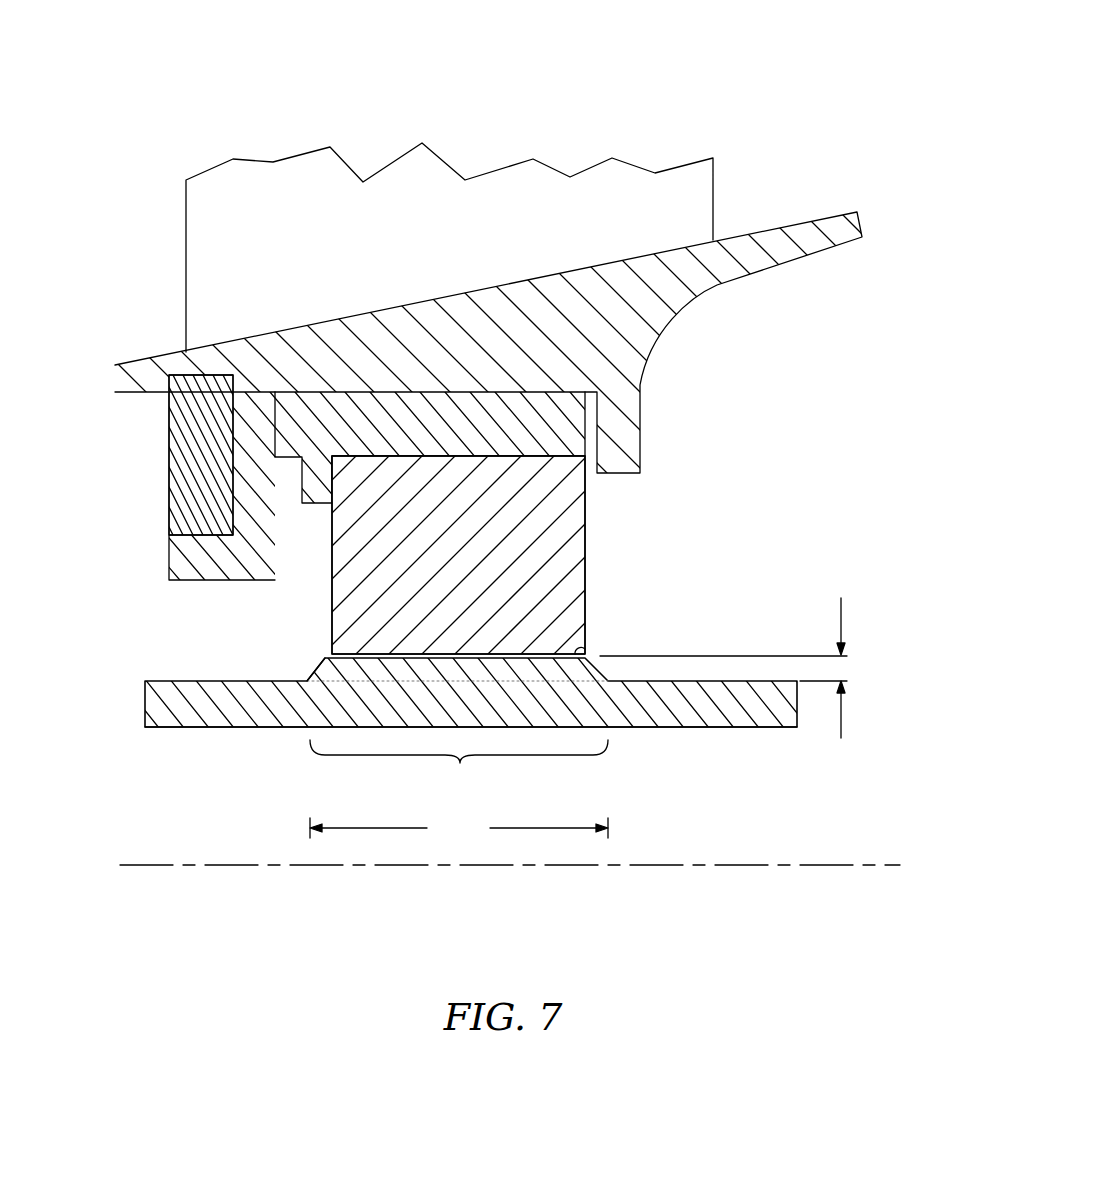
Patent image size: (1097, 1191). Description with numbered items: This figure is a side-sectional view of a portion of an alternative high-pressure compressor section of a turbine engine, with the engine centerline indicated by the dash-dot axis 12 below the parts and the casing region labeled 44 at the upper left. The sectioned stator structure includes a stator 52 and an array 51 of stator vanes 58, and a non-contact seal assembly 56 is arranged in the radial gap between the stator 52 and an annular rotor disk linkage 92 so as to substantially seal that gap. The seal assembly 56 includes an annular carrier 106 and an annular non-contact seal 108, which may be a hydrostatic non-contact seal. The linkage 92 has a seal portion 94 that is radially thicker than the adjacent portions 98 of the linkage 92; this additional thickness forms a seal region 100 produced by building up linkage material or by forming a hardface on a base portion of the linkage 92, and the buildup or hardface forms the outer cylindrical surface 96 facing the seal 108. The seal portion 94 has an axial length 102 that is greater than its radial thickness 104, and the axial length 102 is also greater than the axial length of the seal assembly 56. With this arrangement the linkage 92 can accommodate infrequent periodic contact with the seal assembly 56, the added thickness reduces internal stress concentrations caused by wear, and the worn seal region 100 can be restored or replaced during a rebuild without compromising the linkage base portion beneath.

The engine centerline axis 12 is at (810, 867).
The turbine casing 44 is at (112, 230).
The array of stator vanes 51 is at (782, 88).
The stator 52 is at (815, 218).
The non-contact seal assembly 56 is at (606, 544).
The stator vane 58 is at (441, 238).
The annular rotor disk linkage 92 is at (143, 705).
The seal portion 94 is at (459, 768).
The outer cylindrical surface 96 is at (578, 649).
The adjacent portion of the linkage 98 is at (197, 752).
The seal region 100 is at (338, 670).
The axial length 102 is at (459, 829).
The radial thickness 104 is at (843, 627).
The annular carrier 106 is at (203, 582).
The annular non-contact seal 108 is at (583, 587).